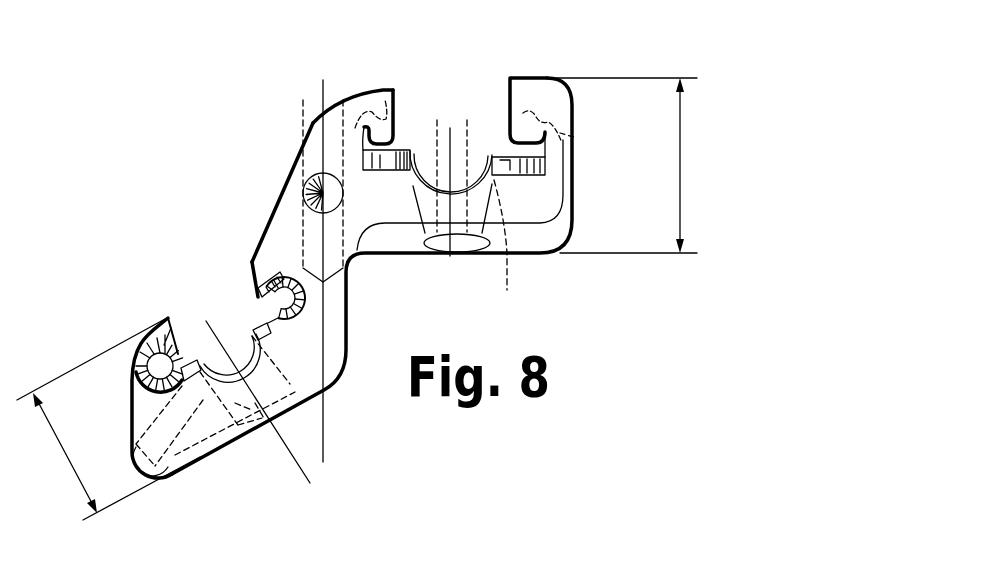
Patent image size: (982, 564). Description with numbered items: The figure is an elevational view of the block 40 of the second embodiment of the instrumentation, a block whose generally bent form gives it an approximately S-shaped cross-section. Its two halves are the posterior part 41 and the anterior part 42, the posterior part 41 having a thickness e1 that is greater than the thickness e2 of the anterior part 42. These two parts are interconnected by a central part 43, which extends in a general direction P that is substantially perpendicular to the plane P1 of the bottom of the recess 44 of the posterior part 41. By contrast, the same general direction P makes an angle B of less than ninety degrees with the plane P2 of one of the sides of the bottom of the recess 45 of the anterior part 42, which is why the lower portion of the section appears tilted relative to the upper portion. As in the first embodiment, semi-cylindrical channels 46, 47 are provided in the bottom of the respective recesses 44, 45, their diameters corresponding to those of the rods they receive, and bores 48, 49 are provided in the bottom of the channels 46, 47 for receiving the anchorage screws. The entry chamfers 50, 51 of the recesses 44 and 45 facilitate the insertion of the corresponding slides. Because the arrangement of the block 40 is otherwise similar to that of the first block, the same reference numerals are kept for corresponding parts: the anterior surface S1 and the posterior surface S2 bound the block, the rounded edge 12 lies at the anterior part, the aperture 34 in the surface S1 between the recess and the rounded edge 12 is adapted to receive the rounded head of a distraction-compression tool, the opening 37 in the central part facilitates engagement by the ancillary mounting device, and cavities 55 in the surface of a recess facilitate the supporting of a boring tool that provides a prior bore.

The rounded edge 12 is at (142, 492).
The aperture 34 is at (200, 460).
The opening 37 is at (316, 119).
The block 40 is at (275, 133).
The posterior part 41 is at (364, 76).
The anterior part 42 is at (146, 298).
The central part 43 is at (268, 200).
The recess of the posterior part 44 is at (407, 98).
The recess of the anterior part 45 is at (237, 300).
The semi-cylindrical channel 46 is at (440, 165).
The semi-cylindrical channel 47 is at (224, 376).
The bore 48 is at (507, 290).
The bore 49 is at (255, 415).
The entry chamfer 50 is at (133, 375).
The entry chamfer 51 is at (577, 138).
The cavity 55 is at (507, 88).
The general direction P is at (324, 80).
The plane of the bottom of the recess of the posterior part P1 is at (408, 150).
The plane of one side of the bottom of the recess of the anterior part P2 is at (260, 323).
The anterior surface S1 is at (145, 345).
The posterior surface S2 is at (545, 78).
The angle B is at (312, 287).
The thickness of the posterior part e1 is at (679, 150).
The thickness of the anterior part e2 is at (53, 437).